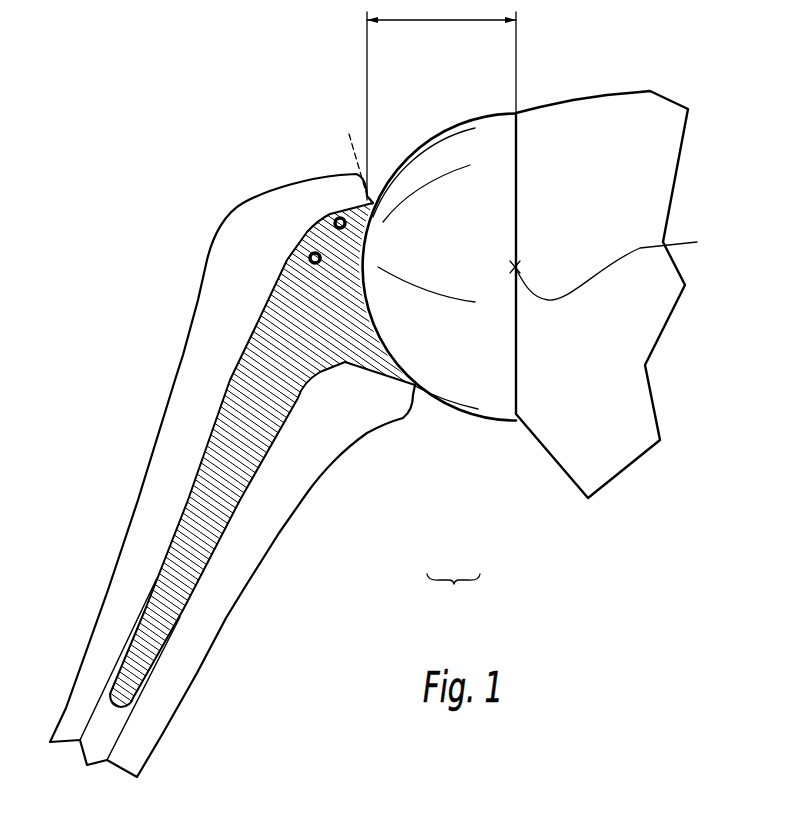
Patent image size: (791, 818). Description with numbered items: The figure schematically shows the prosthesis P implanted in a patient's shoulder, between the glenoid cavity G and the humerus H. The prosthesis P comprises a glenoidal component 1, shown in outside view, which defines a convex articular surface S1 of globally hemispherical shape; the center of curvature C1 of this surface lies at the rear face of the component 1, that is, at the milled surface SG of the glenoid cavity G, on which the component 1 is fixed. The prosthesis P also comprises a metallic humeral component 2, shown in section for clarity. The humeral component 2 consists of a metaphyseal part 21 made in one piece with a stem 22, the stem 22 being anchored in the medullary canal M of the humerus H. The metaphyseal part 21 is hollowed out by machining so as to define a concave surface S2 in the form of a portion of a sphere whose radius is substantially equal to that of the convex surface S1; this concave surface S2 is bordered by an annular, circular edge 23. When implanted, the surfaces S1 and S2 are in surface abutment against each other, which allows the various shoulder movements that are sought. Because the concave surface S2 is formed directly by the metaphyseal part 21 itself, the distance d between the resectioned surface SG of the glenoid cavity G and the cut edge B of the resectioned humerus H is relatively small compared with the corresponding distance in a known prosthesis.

The glenoidal component 1 is at (494, 433).
The humeral component 2 is at (330, 496).
The metaphyseal part 21 is at (317, 238).
The stem 22 is at (197, 488).
The annular and circular edge 23 is at (436, 387).
The distance d is at (441, 100).
The glenoid cavity G is at (650, 105).
The humerus H is at (192, 660).
The medullary canal M is at (92, 745).
The cut edge B is at (349, 153).
The convex articular surface S1 is at (476, 110).
The concave surface S2 is at (374, 309).
The milled surface of the glenoid cavity SG is at (507, 209).
The center of curvature C1 is at (617, 265).
The prosthesis P is at (453, 593).